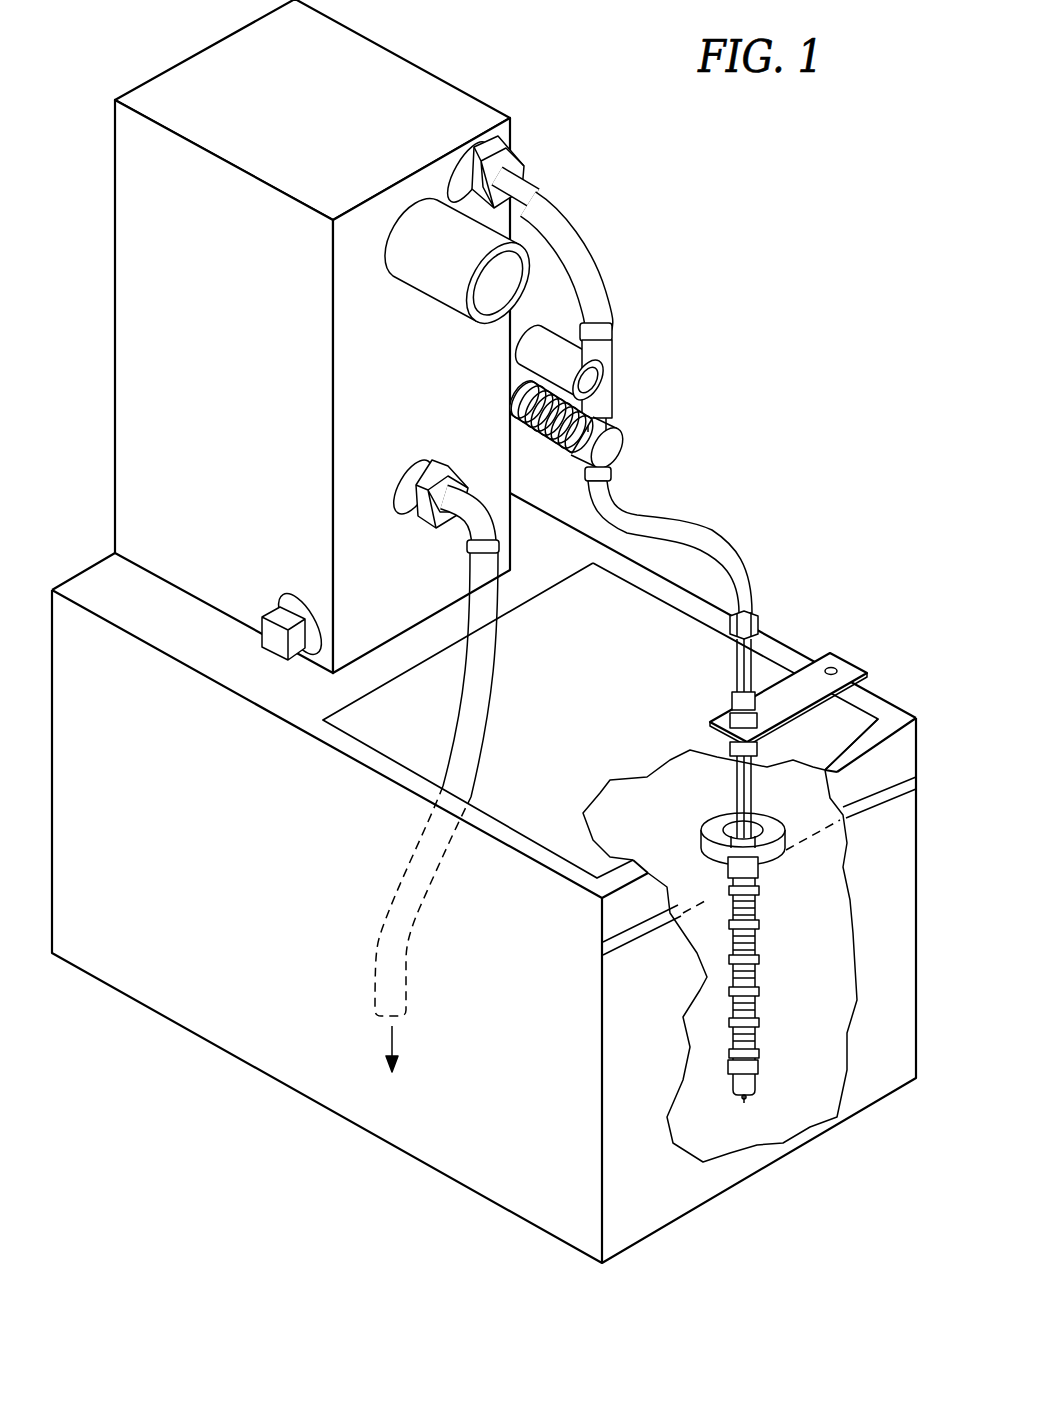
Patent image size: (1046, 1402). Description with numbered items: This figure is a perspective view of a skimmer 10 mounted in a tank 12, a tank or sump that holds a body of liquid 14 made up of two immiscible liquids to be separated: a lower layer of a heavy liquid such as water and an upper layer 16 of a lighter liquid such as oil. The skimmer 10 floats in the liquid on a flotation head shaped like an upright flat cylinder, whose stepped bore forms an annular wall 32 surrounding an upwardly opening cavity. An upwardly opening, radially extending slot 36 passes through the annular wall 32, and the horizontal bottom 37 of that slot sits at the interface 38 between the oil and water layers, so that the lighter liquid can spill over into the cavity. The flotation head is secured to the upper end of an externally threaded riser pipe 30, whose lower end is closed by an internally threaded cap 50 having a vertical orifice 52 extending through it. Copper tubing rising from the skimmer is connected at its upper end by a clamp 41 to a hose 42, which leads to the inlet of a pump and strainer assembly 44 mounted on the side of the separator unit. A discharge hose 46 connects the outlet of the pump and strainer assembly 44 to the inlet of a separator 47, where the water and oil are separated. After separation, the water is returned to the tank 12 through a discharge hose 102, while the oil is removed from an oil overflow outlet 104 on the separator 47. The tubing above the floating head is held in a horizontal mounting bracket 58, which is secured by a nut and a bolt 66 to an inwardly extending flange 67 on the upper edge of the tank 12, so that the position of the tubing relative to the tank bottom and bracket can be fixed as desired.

The skimmer 10 is at (698, 834).
The tank 12 is at (258, 1031).
The body of liquid 14 is at (672, 1057).
The upper layer 16 is at (625, 944).
The riser pipe 30 is at (757, 988).
The annular wall 32 is at (722, 822).
The slot 36 is at (747, 860).
The horizontal bottom 37 is at (748, 870).
The interface 38 is at (645, 948).
The clamp 41 is at (754, 619).
The hose 42 is at (628, 518).
The pump and strainer assembly 44 is at (614, 440).
The discharge hose 46 is at (568, 223).
The separator 47 is at (528, 131).
The cap 50 is at (736, 1086).
The orifice 52 is at (752, 1093).
The mounting bracket 58 is at (778, 688).
The bolt 66 is at (833, 668).
The flange 67 is at (866, 698).
The discharge hose 102 is at (483, 735).
The oil overflow outlet 104 is at (425, 243).